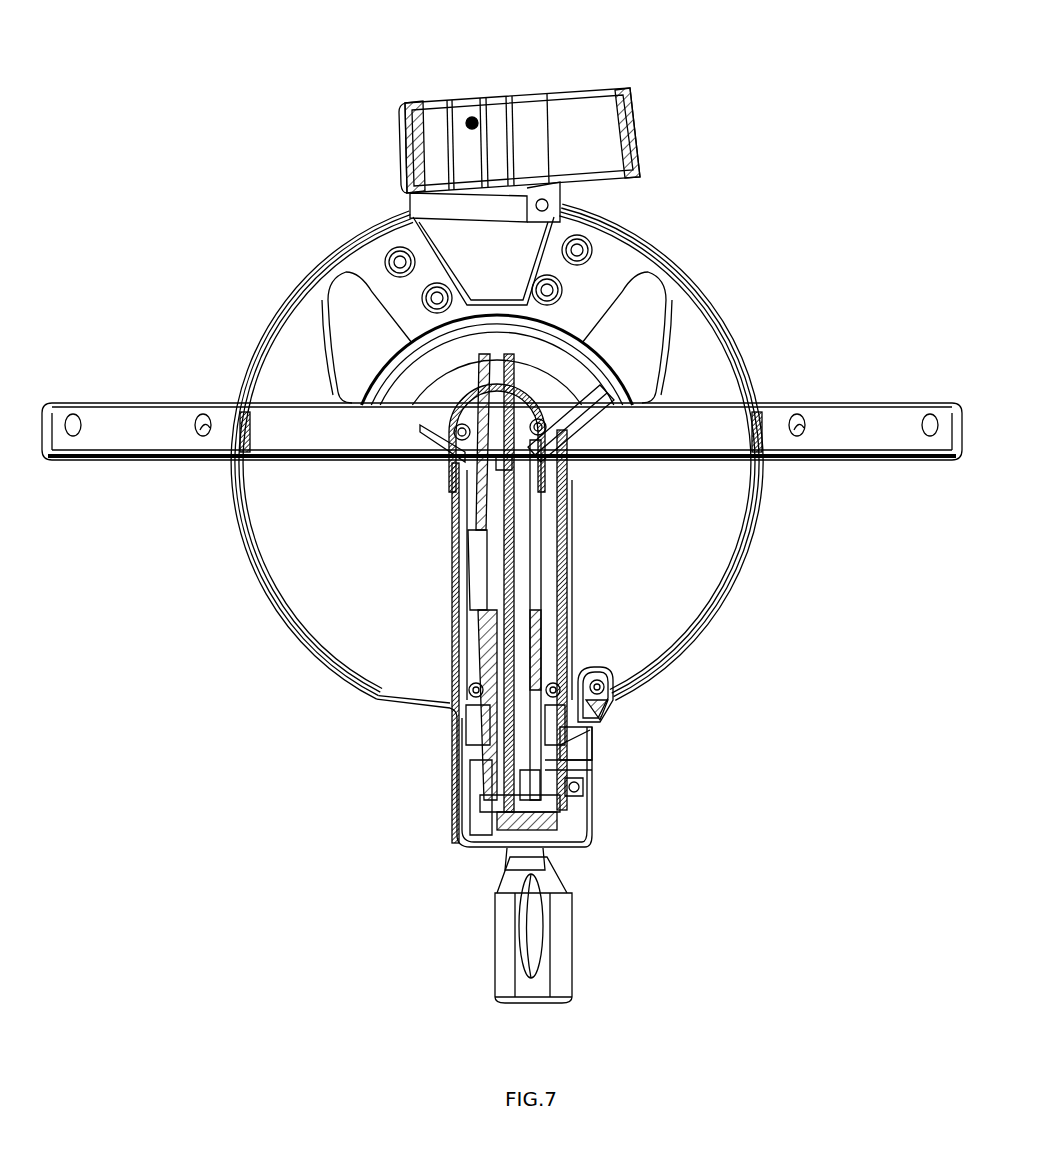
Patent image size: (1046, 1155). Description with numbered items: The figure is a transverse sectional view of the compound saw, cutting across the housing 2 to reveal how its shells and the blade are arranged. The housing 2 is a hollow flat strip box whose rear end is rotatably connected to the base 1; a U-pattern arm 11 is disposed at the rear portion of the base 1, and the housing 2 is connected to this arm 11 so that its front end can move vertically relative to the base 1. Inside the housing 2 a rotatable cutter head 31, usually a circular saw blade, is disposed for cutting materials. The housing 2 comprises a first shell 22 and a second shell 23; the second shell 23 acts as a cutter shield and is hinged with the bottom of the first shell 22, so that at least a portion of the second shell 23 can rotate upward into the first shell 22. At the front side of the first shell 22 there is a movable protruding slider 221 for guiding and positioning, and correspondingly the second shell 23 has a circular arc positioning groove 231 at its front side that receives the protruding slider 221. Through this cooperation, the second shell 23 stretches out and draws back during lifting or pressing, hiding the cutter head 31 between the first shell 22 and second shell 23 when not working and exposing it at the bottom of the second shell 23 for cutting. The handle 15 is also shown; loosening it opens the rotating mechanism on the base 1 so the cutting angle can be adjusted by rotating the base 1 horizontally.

The base 1 is at (698, 593).
The U-pattern arm 11 is at (400, 113).
The housing 2 is at (470, 722).
The first shell 22 is at (590, 784).
The protruding slider 221 is at (587, 762).
The second shell 23 is at (540, 640).
The circular arc positioning groove 231 is at (583, 732).
The cutter head 31 is at (513, 585).
The handle 15 is at (565, 930).